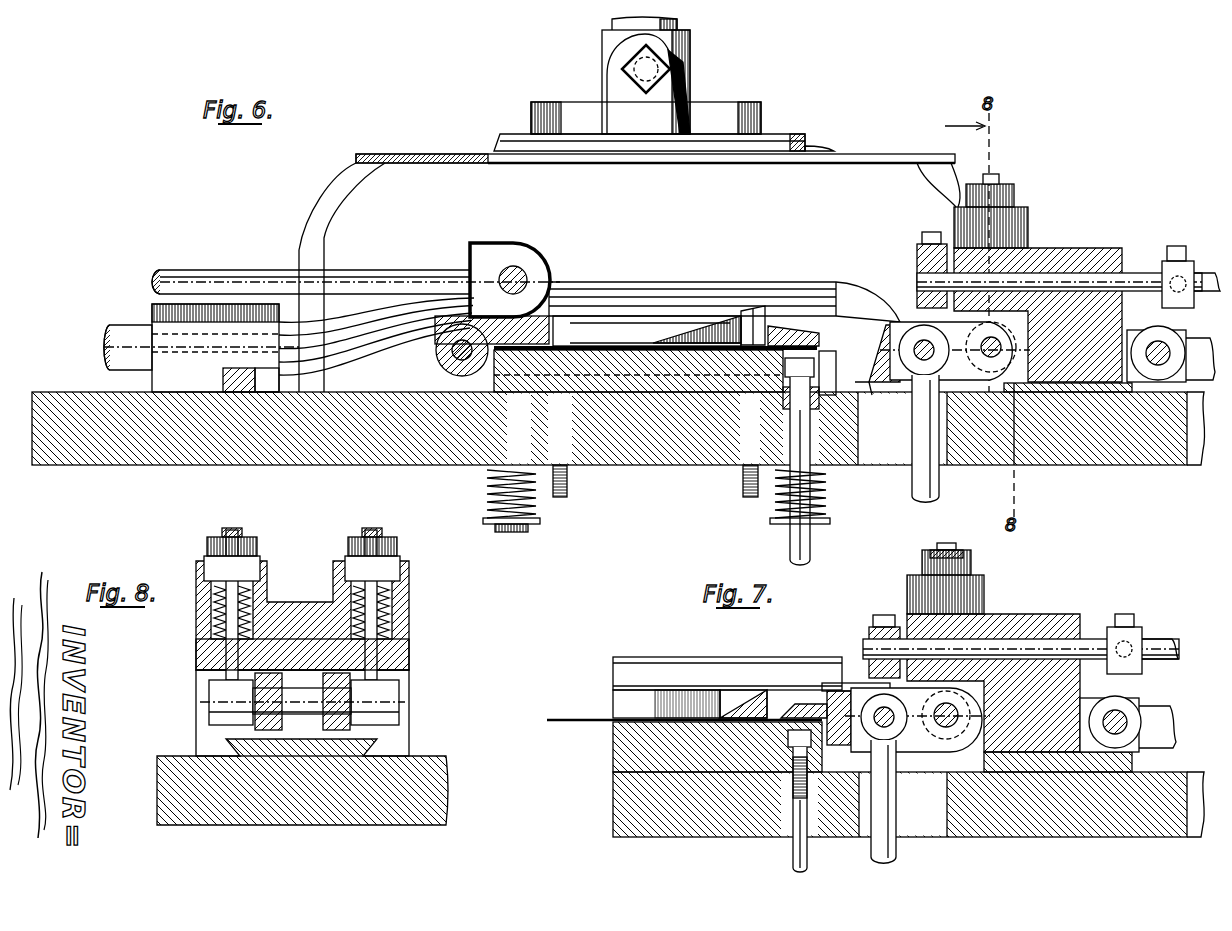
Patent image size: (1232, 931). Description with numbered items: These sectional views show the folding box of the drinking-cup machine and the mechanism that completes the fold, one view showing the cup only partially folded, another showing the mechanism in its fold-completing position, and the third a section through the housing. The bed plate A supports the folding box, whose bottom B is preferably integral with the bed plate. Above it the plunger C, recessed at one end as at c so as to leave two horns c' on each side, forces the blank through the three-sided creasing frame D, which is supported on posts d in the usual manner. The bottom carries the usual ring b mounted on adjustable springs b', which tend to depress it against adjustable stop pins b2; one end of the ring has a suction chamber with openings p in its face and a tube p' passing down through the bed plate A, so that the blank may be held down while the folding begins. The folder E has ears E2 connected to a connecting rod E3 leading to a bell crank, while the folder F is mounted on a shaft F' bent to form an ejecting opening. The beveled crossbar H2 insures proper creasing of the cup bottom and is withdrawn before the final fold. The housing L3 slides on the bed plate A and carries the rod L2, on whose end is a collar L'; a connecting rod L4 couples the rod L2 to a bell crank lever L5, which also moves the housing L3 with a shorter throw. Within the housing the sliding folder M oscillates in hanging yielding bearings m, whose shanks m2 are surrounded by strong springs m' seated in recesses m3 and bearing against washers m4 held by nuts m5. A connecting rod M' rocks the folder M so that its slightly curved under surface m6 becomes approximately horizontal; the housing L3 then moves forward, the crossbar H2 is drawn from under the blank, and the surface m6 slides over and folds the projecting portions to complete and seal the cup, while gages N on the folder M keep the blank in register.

In FIG. 6, the bed plate A is at (1126, 466).
In FIG. 8, the bed plate A is at (440, 749).
In FIG. 7, the bed plate A is at (1163, 761).
In FIG. 6, the bottom of the folding box B is at (624, 354).
In FIG. 7, the bottom of the folding box B is at (613, 741).
In FIG. 6, the plunger C is at (646, 75).
In FIG. 6, the recess c is at (657, 133).
In FIG. 6, the horns or projections c' is at (828, 133).
In FIG. 6, the creasing frame D is at (470, 143).
In FIG. 6, the posts d is at (362, 194).
In FIG. 6, the folder E is at (556, 318).
In FIG. 6, the ears E2 is at (547, 263).
In FIG. 6, the connecting rod E3 is at (330, 273).
In FIG. 6, the folder F is at (647, 301).
In FIG. 6, the shaft F' is at (376, 336).
In FIG. 6, the beveled crossbar H2 is at (776, 330).
In FIG. 7, the beveled crossbar H2 is at (748, 707).
In FIG. 6, the gages N is at (868, 324).
In FIG. 7, the gages N is at (838, 672).
In FIG. 6, the sliding folder M is at (949, 322).
In FIG. 8, the sliding folder M is at (302, 700).
In FIG. 7, the sliding folder M is at (908, 719).
In FIG. 6, the connecting rod M' is at (907, 438).
In FIG. 7, the connecting rod M' is at (897, 801).
In FIG. 6, the hanging yielding bearings m is at (957, 348).
In FIG. 8, the hanging yielding bearings m is at (320, 702).
In FIG. 7, the hanging yielding bearings m is at (915, 729).
In FIG. 8, the springs m' is at (337, 605).
In FIG. 6, the shanks m2 is at (994, 175).
In FIG. 8, the shanks m2 is at (410, 647).
In FIG. 7, the shanks m2 is at (951, 547).
In FIG. 8, the recess m3 is at (410, 578).
In FIG. 8, the washer m4 is at (399, 559).
In FIG. 7, the washer m4 is at (929, 574).
In FIG. 8, the nut m5 is at (387, 538).
In FIG. 7, the nut m5 is at (937, 553).
In FIG. 6, the under horizontal surface m6 is at (862, 384).
In FIG. 6, the collar L' is at (922, 263).
In FIG. 7, the collar L' is at (871, 634).
In FIG. 6, the rod L2 is at (1132, 276).
In FIG. 7, the rod L2 is at (1083, 638).
In FIG. 6, the housing L3 is at (1072, 266).
In FIG. 8, the housing L3 is at (294, 598).
In FIG. 7, the housing L3 is at (1010, 632).
In FIG. 6, the connecting rod L4 is at (1210, 298).
In FIG. 7, the connecting rod L4 is at (1170, 660).
In FIG. 6, the bell crank lever L5 is at (1180, 367).
In FIG. 7, the bell crank lever L5 is at (1162, 718).
In FIG. 6, the ring b is at (643, 357).
In FIG. 7, the ring b is at (811, 750).
In FIG. 6, the adjustable springs b' is at (654, 501).
In FIG. 6, the adjustable stop pins b2 is at (563, 480).
In FIG. 6, the openings p is at (835, 373).
In FIG. 6, the tube p' is at (787, 461).
In FIG. 7, the tube p' is at (800, 809).